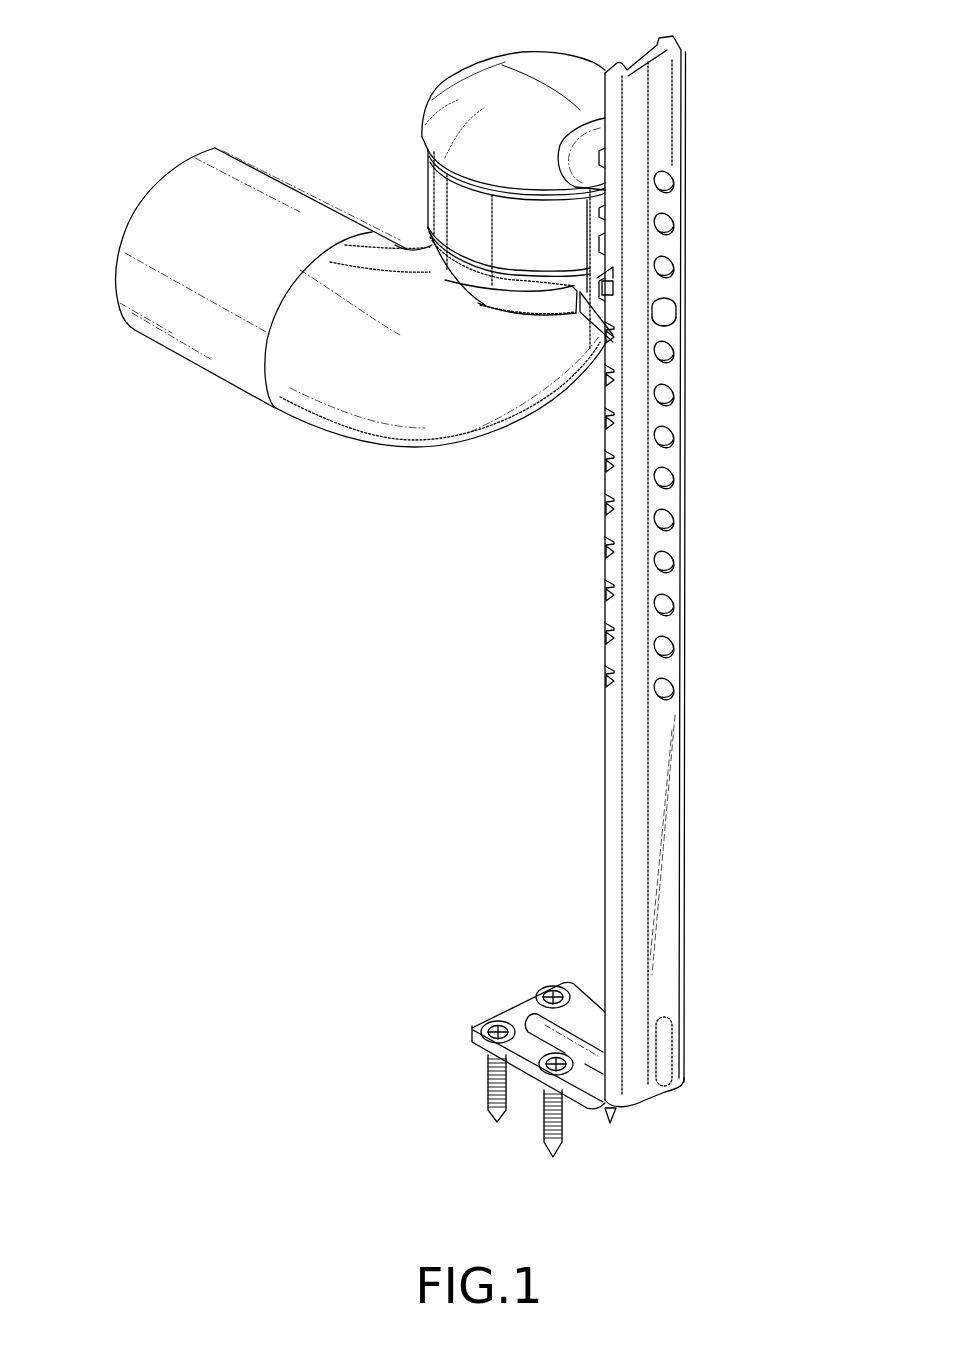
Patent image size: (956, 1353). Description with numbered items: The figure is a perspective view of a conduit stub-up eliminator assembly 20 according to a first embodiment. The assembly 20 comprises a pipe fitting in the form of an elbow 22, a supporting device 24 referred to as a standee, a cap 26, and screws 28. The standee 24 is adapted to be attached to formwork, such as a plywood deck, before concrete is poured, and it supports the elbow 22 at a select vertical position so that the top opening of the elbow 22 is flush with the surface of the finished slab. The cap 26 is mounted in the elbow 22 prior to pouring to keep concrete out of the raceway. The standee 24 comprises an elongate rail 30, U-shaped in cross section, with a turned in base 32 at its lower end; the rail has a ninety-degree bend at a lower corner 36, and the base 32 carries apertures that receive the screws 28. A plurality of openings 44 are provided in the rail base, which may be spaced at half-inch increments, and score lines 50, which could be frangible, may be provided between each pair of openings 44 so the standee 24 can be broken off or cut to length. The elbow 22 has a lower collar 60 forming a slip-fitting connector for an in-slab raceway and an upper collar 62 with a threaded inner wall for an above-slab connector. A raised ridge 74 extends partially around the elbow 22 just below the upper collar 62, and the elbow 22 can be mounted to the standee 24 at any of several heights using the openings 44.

The stub-up eliminator assembly 20 is at (276, 521).
The elbow 22 is at (482, 447).
The standee 24 is at (689, 803).
The cap 26 is at (567, 60).
The screws 28 is at (488, 1090).
The elongate rail 30 is at (668, 897).
The turned in base 32 is at (525, 1012).
The lower corner 36 is at (633, 1093).
The openings 44 is at (670, 186).
The score lines 50 is at (650, 261).
The lower collar 60 is at (178, 345).
The upper collar 62 is at (428, 198).
The raised ridge 74 is at (517, 305).